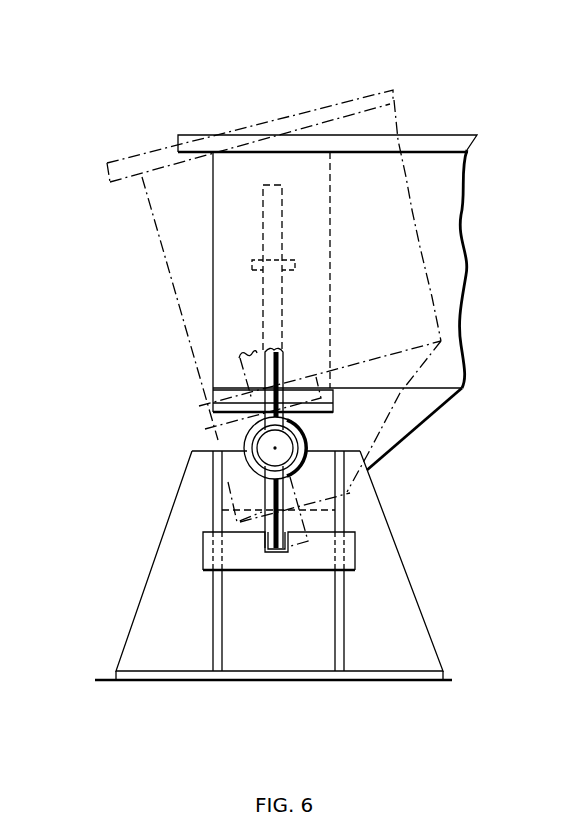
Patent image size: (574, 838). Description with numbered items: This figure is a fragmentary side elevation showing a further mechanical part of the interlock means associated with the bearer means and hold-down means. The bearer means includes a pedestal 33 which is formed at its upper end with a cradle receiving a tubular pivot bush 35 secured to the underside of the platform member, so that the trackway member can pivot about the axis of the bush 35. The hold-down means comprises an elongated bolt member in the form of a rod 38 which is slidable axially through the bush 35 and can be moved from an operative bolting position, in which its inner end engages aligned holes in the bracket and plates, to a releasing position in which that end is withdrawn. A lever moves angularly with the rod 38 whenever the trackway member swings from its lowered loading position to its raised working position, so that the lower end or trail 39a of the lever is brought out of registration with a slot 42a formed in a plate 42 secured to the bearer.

The pedestal 33 is at (273, 565).
The tubular pivot bush 35 is at (299, 465).
The rod 38 is at (282, 446).
The trail of the lever 39a is at (262, 553).
The plate 42 is at (289, 556).
The slot 42a is at (274, 572).